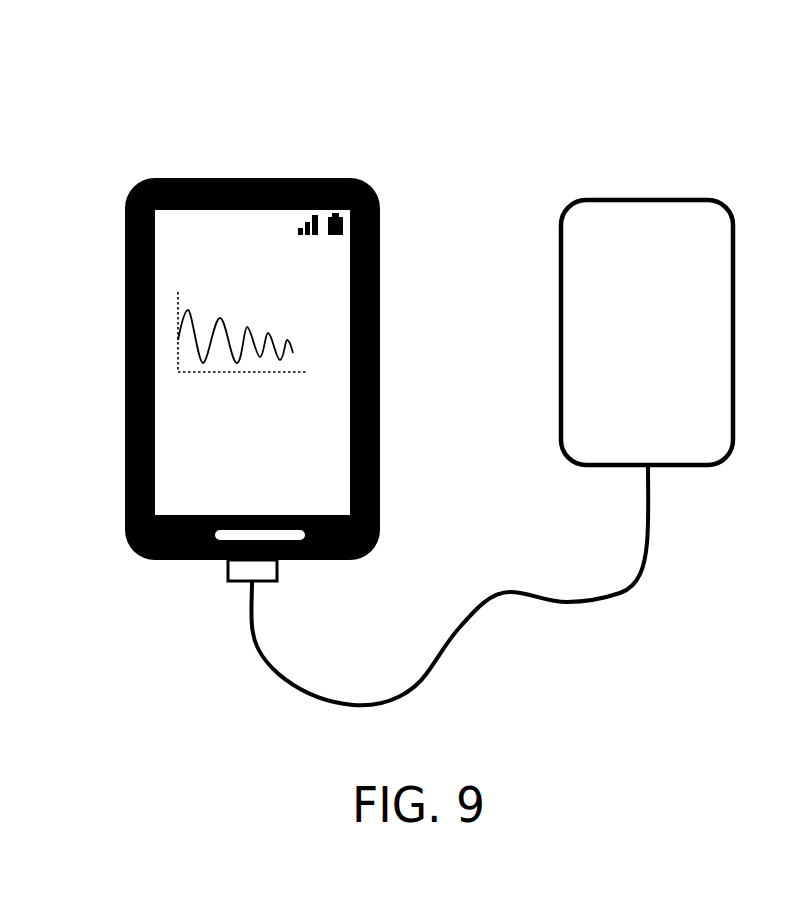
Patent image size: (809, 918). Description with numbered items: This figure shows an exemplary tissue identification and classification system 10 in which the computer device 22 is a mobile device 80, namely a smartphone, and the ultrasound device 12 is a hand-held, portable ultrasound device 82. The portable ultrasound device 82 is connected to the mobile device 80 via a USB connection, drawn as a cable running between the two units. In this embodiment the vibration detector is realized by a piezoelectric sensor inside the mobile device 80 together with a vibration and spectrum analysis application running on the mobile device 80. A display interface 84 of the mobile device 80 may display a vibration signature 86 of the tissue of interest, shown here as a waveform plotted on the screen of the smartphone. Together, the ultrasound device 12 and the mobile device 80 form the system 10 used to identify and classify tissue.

The tissue identification and classification system 10 is at (486, 62).
The ultrasound device 12 is at (733, 249).
The computer device 22 is at (190, 178).
The mobile device 80 is at (273, 178).
The hand-held, portable ultrasound device 82 is at (733, 287).
The display interface 84 is at (196, 257).
The vibration signature 86 is at (263, 300).